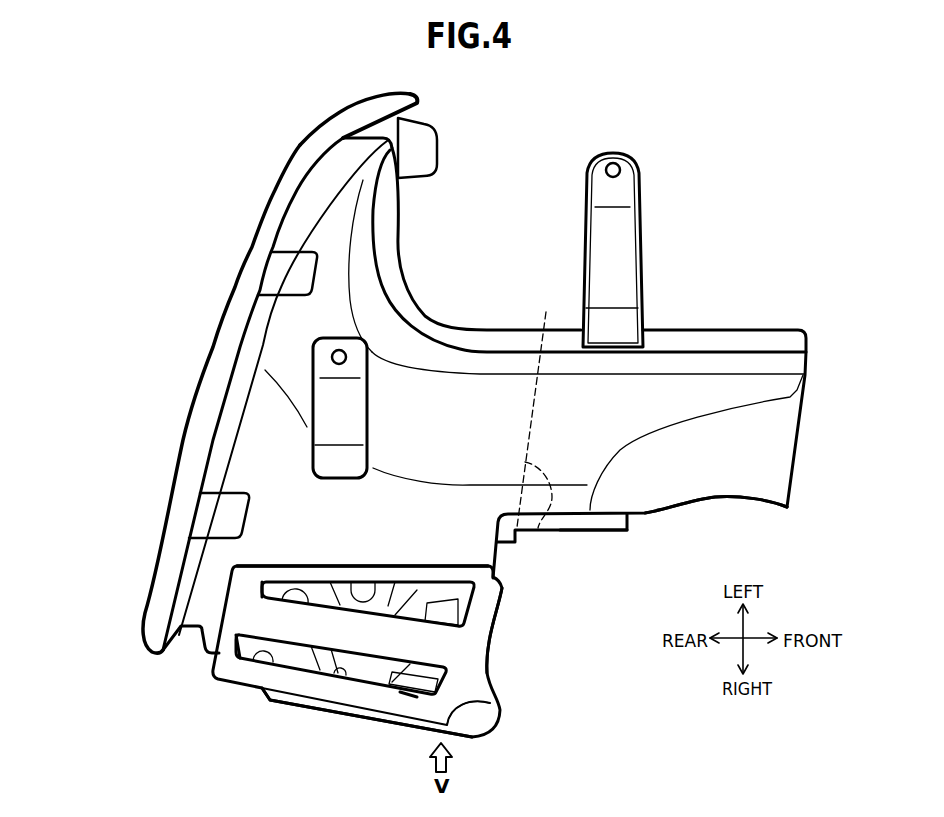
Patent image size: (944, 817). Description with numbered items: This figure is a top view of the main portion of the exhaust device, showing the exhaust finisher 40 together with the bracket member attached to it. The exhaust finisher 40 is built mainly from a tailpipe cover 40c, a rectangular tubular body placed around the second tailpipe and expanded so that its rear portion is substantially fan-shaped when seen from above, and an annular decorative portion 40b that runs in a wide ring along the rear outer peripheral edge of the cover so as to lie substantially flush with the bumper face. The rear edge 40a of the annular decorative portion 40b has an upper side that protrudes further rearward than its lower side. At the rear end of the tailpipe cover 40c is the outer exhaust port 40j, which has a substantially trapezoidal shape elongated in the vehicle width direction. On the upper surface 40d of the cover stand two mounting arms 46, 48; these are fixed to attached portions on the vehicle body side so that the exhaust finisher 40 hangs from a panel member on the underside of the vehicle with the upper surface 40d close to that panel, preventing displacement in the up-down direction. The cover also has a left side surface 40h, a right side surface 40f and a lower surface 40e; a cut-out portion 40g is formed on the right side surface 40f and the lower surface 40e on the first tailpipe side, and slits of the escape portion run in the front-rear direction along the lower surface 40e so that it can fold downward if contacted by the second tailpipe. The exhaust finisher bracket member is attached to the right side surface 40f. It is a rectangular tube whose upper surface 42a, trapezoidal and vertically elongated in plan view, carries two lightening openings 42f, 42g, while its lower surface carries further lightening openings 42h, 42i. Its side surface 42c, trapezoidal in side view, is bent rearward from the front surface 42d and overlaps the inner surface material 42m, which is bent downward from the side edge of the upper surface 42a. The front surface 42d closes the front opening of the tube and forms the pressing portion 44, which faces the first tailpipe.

The exhaust finisher 40 is at (775, 324).
The rear edge 40a is at (147, 636).
The annular decorative portion 40b is at (181, 394).
The tailpipe cover 40c is at (568, 390).
The upper surface 40d is at (683, 390).
The lower surface 40e is at (537, 521).
The right side surface 40f is at (597, 522).
The cut-out portion 40g is at (783, 512).
The left side surface 40h is at (500, 341).
The outer exhaust port 40j is at (346, 111).
The upper surface 42a is at (262, 667).
The side surface 42c is at (357, 712).
The front surface 42d is at (497, 656).
The lightening opening 42f is at (297, 622).
The lightening opening 42g is at (258, 691).
The lightening opening 42h is at (342, 676).
The lightening opening 42i is at (357, 596).
The inner surface material 42m is at (293, 706).
The pressing portion 44 is at (490, 637).
The mounting arm 46 is at (353, 347).
The mounting arm 48 is at (637, 188).